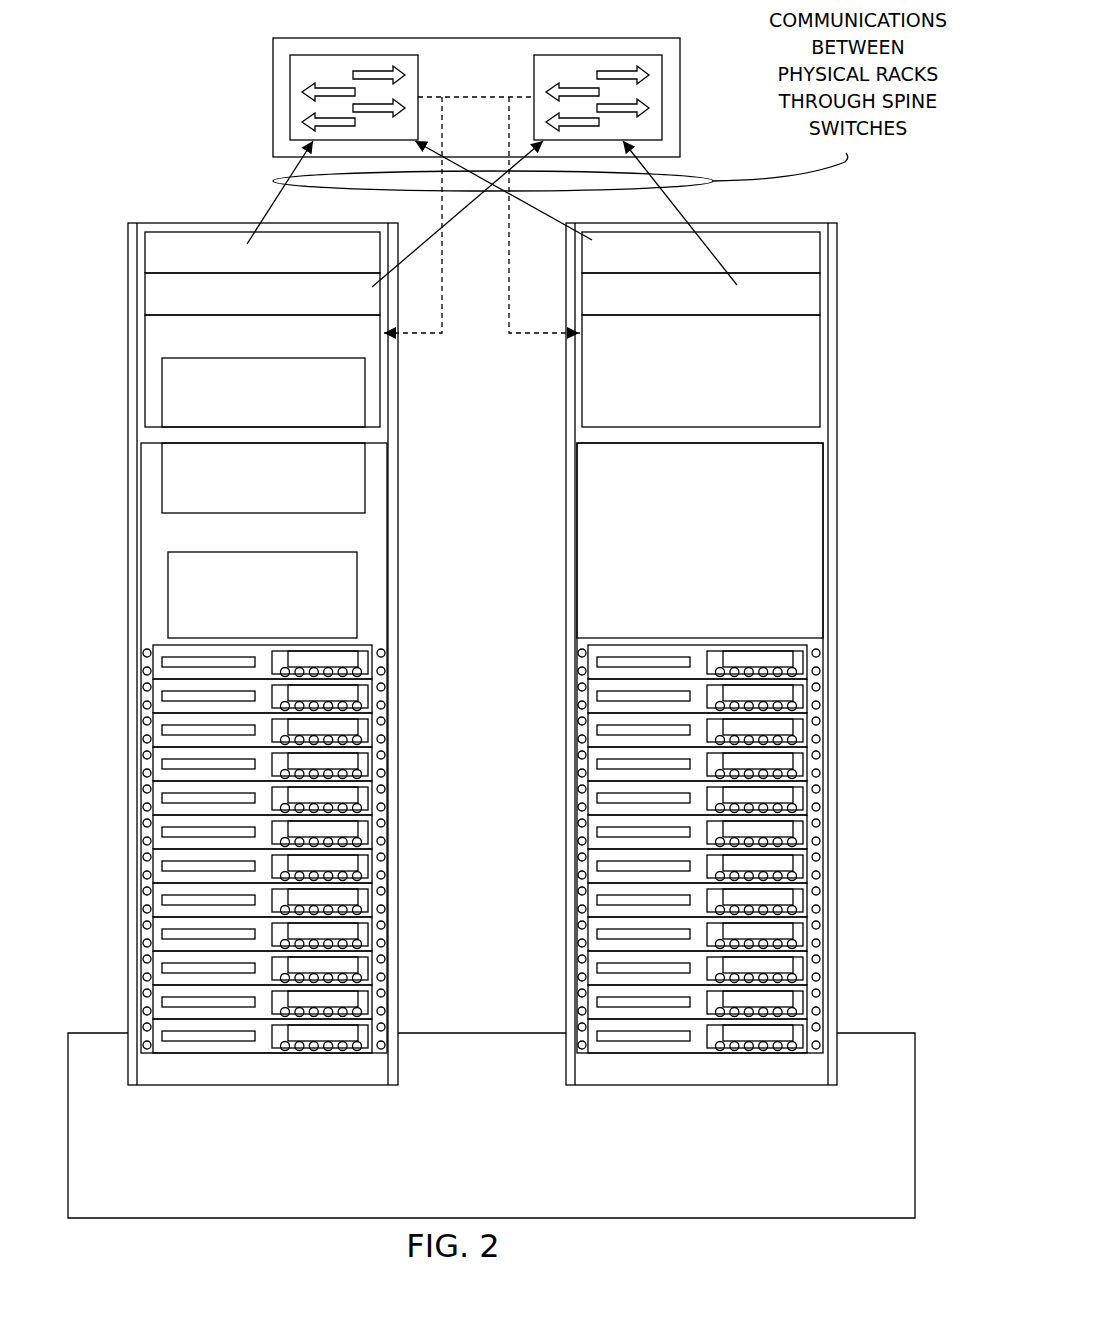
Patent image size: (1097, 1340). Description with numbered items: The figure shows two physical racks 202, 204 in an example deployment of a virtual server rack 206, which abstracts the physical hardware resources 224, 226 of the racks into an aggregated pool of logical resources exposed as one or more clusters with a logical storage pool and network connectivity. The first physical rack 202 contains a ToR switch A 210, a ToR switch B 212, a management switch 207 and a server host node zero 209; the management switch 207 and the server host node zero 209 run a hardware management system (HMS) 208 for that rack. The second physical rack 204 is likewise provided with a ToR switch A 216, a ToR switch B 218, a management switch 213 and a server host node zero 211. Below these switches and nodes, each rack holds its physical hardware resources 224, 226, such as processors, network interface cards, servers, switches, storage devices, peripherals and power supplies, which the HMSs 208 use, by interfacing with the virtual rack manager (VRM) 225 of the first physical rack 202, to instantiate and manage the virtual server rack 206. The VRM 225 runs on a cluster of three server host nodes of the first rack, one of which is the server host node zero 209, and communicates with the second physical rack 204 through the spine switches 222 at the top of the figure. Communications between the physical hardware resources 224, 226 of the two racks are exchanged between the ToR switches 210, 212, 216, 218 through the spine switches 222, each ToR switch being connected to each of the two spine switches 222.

The first physical rack 202 is at (152, 1097).
The second physical rack 204 is at (812, 1085).
The virtual server rack 206 is at (216, 1219).
The management switch 207 is at (145, 345).
The hardware management system (HMS) 208 is at (150, 436).
The server host node(0) 209 is at (150, 485).
The ToR switch A 210 is at (145, 255).
The server host node(0) 211 is at (812, 495).
The ToR switch B 212 is at (145, 297).
The management switch 213 is at (820, 345).
The ToR switch A 216 is at (828, 253).
The ToR switch B 218 is at (820, 297).
The spine switches 222 is at (273, 97).
The physical hardware resources 224 is at (128, 1082).
The virtual rack manager (VRM) 225 is at (168, 615).
The physical hardware resources 226 is at (838, 1082).